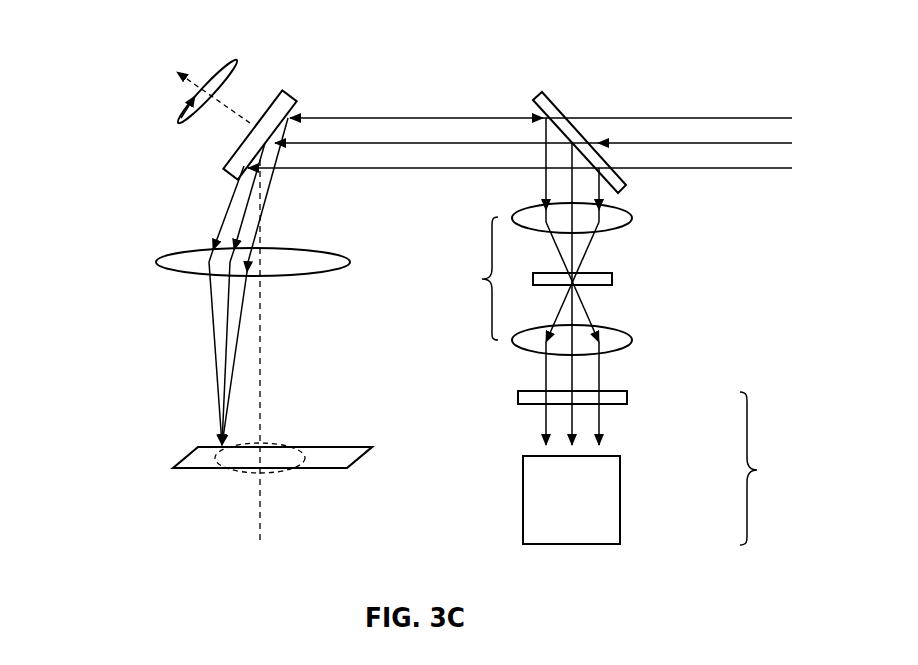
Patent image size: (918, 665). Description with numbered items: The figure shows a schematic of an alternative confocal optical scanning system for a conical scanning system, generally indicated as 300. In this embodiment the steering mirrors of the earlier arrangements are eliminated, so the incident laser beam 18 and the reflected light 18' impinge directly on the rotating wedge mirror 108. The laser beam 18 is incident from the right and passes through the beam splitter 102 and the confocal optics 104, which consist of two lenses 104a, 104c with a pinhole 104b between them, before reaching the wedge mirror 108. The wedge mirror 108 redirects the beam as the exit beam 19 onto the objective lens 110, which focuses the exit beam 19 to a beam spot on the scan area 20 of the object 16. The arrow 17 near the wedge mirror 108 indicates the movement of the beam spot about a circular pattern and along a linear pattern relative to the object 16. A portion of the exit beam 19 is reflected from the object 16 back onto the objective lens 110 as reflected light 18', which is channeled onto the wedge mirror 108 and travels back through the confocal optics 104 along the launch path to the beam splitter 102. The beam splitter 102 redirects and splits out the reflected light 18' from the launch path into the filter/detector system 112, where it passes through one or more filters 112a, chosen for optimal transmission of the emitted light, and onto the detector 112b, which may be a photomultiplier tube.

The alternative embodiment optical scanning system 300 is at (130, 38).
The arrow 17 is at (180, 118).
The rotating wedge mirror 108 is at (293, 94).
The laser beam 18 is at (521, 121).
The beam splitter 102 is at (483, 105).
The exit beam 19 is at (222, 216).
The objective lens 110 is at (157, 262).
The reflected light 18' is at (259, 353).
The object 16 is at (362, 452).
The scan area 20 is at (240, 472).
The confocal optics 104 is at (586, 271).
The lens 104a is at (632, 216).
The pinhole 104b is at (613, 279).
The lens 104c is at (632, 340).
The filter/detector system 112 is at (661, 458).
The filter 112a is at (627, 397).
The detector 112b is at (620, 498).